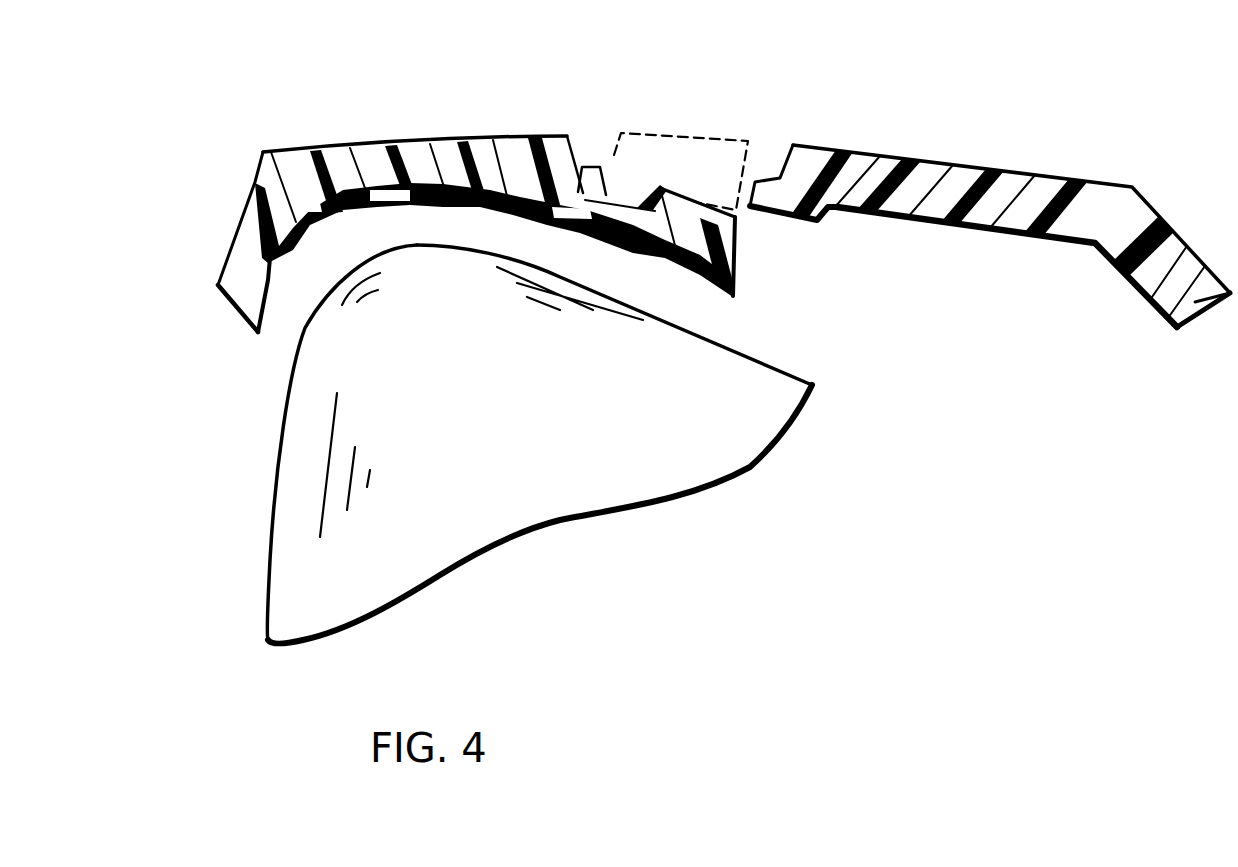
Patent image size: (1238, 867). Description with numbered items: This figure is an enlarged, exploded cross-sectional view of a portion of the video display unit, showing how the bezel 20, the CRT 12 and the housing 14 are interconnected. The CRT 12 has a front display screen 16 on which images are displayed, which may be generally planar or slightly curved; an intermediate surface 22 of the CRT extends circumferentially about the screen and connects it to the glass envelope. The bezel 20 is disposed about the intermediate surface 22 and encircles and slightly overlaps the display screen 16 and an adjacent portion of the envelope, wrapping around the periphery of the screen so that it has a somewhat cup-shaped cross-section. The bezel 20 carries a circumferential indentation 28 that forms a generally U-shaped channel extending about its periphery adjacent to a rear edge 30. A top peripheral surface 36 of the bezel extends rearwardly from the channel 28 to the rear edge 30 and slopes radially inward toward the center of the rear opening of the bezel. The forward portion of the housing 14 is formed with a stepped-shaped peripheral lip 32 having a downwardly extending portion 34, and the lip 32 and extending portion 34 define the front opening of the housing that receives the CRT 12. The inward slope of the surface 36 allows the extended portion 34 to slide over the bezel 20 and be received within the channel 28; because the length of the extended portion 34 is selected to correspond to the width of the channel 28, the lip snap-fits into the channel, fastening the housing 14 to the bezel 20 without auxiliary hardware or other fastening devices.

The CRT 12 is at (723, 447).
The housing 14 is at (1048, 187).
The front display screen 16 is at (290, 433).
The bezel 20 is at (430, 148).
The intermediate surface 22 is at (407, 212).
The circumferential indentation 28 is at (605, 195).
The rear edge 30 is at (737, 253).
The stepped-shaped peripheral lip 32 is at (807, 157).
The downwardly extending portion 34 is at (780, 215).
The top peripheral surface 36 is at (692, 200).